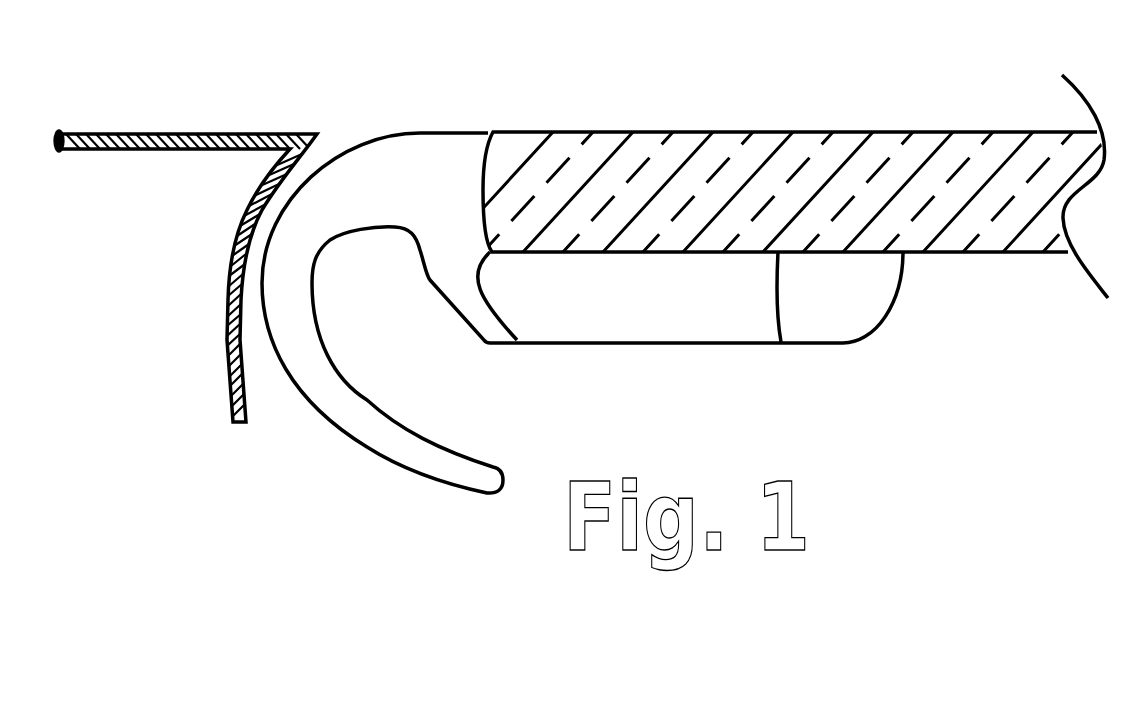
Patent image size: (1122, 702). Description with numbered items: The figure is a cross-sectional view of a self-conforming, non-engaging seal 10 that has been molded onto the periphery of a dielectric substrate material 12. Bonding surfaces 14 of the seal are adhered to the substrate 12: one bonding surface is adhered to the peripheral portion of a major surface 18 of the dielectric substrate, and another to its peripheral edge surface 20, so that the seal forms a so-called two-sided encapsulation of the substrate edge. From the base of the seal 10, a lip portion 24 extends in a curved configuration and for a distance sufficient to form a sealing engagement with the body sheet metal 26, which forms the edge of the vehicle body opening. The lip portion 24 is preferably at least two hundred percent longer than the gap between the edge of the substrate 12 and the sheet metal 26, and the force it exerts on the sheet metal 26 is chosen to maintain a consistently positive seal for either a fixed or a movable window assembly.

The self-conforming, non-engaging seal 10 is at (368, 100).
The dielectric substrate material 12 is at (640, 132).
The bonding surfaces 14 is at (483, 167).
The major surface 18 is at (620, 252).
The peripheral edge surface 20 is at (517, 340).
The lip portion 24 is at (364, 450).
The body sheet metal 26 is at (233, 281).